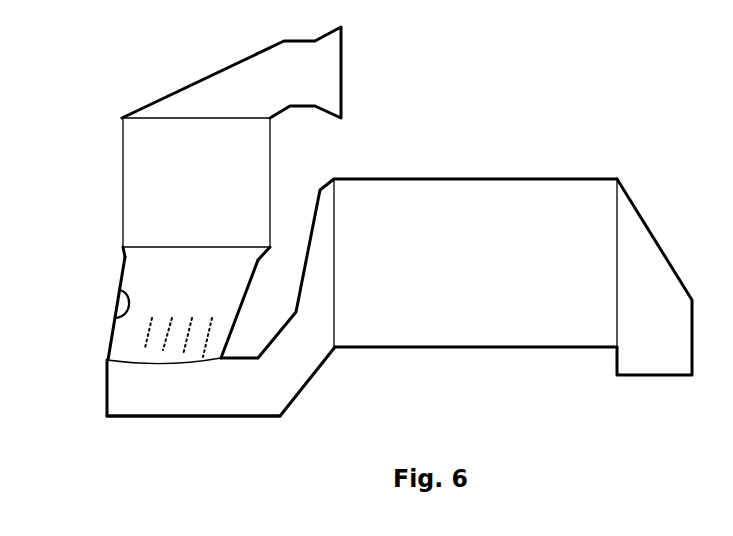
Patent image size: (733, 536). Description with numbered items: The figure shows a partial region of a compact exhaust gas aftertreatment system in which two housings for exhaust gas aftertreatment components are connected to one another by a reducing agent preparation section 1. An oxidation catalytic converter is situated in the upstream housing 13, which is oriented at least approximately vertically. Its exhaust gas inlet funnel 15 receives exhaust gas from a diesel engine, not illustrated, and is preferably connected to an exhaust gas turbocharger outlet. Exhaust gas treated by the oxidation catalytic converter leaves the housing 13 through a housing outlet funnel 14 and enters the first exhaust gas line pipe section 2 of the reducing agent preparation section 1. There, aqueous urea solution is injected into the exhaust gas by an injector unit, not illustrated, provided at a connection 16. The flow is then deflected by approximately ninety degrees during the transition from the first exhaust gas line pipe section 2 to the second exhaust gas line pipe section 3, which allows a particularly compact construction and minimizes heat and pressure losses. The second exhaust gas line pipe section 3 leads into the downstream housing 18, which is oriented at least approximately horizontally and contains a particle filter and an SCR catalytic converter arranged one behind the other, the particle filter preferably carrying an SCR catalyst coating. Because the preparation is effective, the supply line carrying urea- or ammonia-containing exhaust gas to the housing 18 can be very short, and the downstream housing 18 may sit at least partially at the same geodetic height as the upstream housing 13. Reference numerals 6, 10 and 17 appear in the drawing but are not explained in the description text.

The reducing agent preparation section 1 is at (361, 275).
The first exhaust gas line pipe section 2 is at (120, 343).
The second exhaust gas line pipe section 3 is at (167, 407).
The base portion 6 is at (120, 397).
The perforated region 10 is at (190, 320).
The upstream housing 13 is at (135, 182).
The housing outlet funnel 14 is at (133, 257).
The exhaust gas inlet funnel 15 is at (330, 55).
The connection 16 is at (120, 308).
The inclined side wall 17 is at (318, 215).
The downstream housing 18 is at (470, 198).